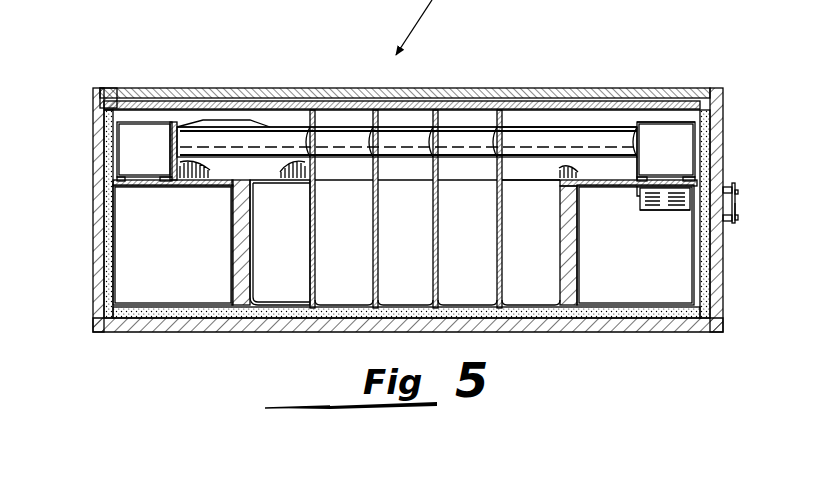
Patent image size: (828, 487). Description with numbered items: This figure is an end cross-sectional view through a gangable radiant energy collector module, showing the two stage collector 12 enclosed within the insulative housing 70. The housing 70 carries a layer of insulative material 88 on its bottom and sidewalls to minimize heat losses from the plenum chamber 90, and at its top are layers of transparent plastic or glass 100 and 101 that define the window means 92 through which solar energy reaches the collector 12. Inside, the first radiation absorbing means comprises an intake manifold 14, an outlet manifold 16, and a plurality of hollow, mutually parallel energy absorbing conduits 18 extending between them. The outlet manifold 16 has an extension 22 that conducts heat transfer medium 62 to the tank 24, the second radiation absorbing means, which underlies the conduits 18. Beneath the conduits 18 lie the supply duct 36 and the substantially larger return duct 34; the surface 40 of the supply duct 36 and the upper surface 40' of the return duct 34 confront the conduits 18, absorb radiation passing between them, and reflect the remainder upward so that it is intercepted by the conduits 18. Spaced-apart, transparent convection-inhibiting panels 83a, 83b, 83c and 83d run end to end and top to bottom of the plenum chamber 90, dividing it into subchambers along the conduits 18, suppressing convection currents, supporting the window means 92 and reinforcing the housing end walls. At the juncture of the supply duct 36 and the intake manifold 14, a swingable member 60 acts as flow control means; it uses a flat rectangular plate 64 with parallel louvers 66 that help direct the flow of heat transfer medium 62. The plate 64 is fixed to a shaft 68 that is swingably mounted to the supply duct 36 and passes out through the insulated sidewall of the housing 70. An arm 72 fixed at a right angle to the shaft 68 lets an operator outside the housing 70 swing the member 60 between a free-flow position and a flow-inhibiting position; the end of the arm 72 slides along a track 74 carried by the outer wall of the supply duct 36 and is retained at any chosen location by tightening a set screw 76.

The two stage collector 12 is at (471, 118).
The intake manifold 14 is at (687, 119).
The outlet manifold 16 is at (130, 124).
The energy absorbing conduits 18 is at (289, 132).
The extension 22 is at (251, 121).
The tank 24 is at (549, 169).
The return duct 34 is at (100, 208).
The supply duct 36 is at (700, 278).
The surface 40 is at (569, 170).
The upper surface 40' is at (242, 172).
The swingable member 60 is at (641, 220).
The heat transfer medium 62 is at (158, 156).
The plate 64 is at (640, 208).
The louvers 66 is at (667, 210).
The shaft 68 is at (738, 187).
The insulative housing 70 is at (593, 332).
The arm 72 is at (738, 197).
The track 74 is at (735, 228).
The set screw 76 is at (738, 218).
The convection-inhibiting panel 83a is at (502, 203).
The convection-inhibiting panel 83b is at (440, 203).
The convection-inhibiting panel 83c is at (380, 203).
The convection-inhibiting panel 83d is at (317, 203).
The layer of insulative material 88 is at (300, 263).
The plenum chamber 90 is at (530, 118).
The window means 92 is at (132, 75).
The transparent layer 100 is at (582, 94).
The transparent layer 101 is at (627, 108).